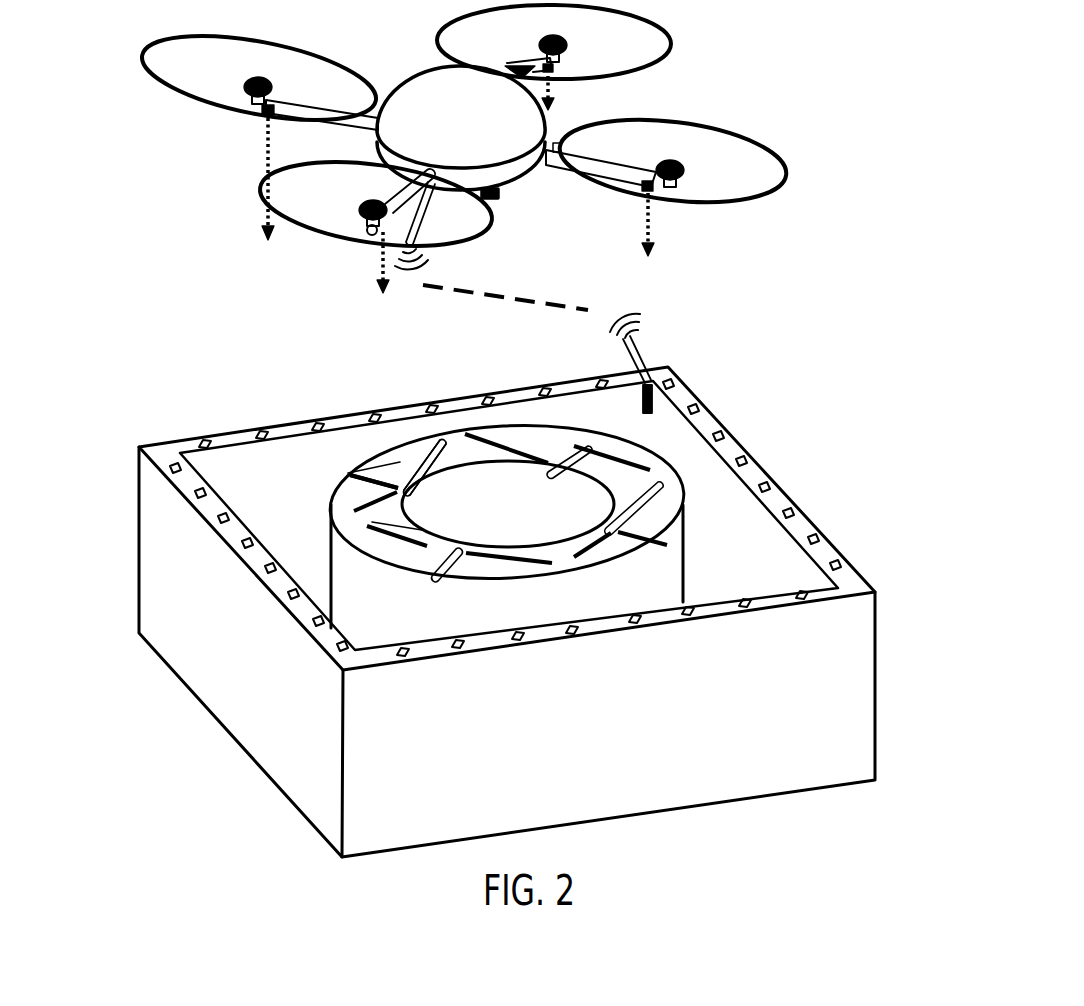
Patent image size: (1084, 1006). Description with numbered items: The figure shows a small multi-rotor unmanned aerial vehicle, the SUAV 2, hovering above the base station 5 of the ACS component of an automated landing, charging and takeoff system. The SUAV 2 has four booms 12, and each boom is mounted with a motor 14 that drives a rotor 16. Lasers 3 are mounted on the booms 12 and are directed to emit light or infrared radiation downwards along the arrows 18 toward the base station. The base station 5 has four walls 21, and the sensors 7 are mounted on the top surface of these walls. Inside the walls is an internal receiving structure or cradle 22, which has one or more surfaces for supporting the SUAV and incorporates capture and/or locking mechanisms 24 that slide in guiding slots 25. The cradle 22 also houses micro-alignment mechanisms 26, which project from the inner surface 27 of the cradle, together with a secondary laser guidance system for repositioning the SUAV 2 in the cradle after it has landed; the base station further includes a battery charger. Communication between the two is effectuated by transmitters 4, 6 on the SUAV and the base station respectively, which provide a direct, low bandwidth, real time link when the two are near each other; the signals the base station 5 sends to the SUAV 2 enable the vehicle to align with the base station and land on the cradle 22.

The SUAV 2 is at (410, 72).
The lasers 3 is at (262, 117).
The transmitter 4 is at (407, 242).
The base station 5 is at (230, 428).
The transmitter 6 is at (628, 337).
The sensors 7 is at (718, 433).
The booms 12 is at (560, 174).
The motor 14 is at (677, 160).
The rotor 16 is at (762, 157).
The arrows 18 is at (263, 217).
The walls 21 is at (182, 560).
The internal receiving structure 22 is at (686, 557).
The capture and/or locking mechanisms 24 is at (414, 458).
The guiding slots 25 is at (432, 446).
The micro-alignment mechanisms 26 is at (603, 511).
The inner surface 27 is at (530, 498).